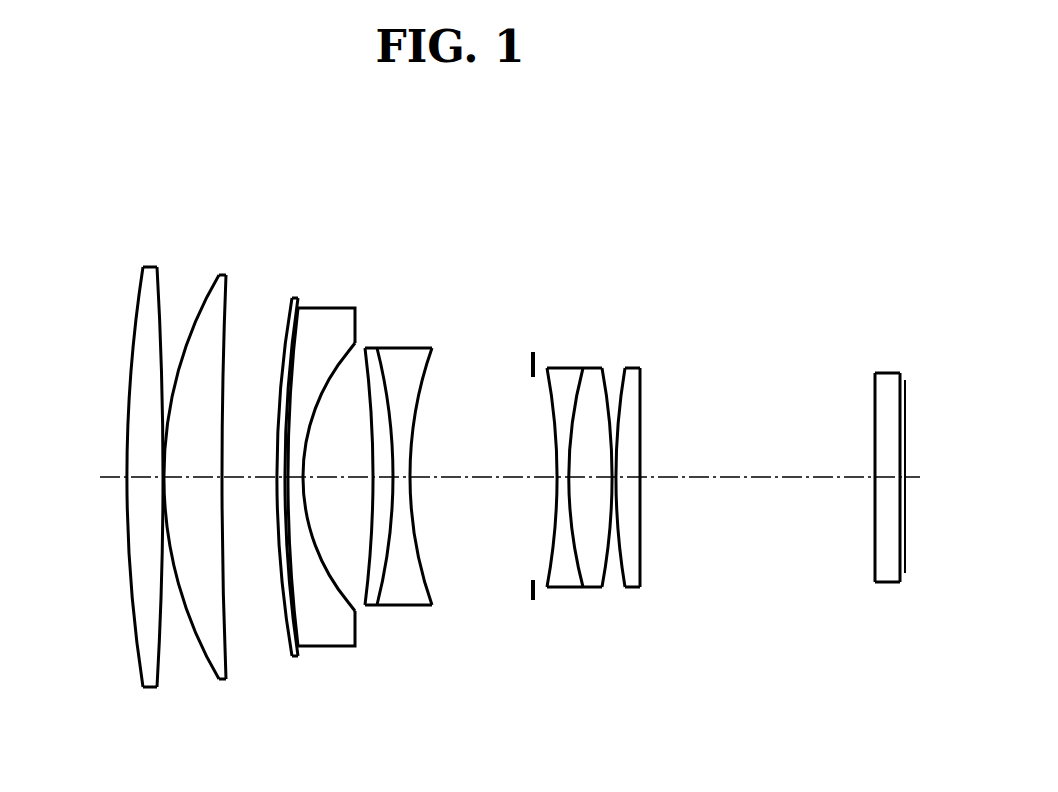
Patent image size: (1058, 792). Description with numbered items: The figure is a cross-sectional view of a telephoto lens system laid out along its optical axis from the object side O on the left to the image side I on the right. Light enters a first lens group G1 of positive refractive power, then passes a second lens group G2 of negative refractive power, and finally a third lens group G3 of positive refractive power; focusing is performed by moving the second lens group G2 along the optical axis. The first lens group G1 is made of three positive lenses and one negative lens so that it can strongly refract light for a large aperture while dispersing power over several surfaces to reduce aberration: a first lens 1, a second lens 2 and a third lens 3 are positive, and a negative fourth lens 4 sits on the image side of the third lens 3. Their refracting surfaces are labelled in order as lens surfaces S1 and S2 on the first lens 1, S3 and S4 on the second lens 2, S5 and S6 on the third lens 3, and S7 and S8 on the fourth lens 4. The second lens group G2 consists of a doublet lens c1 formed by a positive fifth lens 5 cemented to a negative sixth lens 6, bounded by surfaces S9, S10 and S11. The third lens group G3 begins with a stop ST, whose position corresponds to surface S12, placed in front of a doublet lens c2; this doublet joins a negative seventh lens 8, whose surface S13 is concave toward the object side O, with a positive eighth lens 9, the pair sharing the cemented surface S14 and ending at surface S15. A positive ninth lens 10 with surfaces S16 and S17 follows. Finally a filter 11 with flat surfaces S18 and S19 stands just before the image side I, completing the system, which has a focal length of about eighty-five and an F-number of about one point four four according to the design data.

The first lens 1 is at (150, 267).
The second lens 2 is at (222, 275).
The third lens 3 is at (292, 298).
The fourth lens 4 is at (345, 308).
The fifth lens 5 is at (375, 348).
The sixth lens 6 is at (414, 348).
The seventh lens 8 is at (559, 368).
The eighth lens 9 is at (591, 368).
The ninth lens 10 is at (636, 368).
The filter 11 is at (890, 373).
The first lens group G1 is at (358, 203).
The second lens group G2 is at (365, 203).
The third lens group G3 is at (640, 203).
The doublet lens c1 is at (423, 272).
The doublet lens c2 is at (553, 295).
The stop ST is at (532, 360).
The object side O is at (71, 477).
The image side I is at (932, 478).
The lens surface S1 is at (135, 645).
The lens surface S2 is at (163, 650).
The lens surface S3 is at (196, 648).
The lens surface S4 is at (226, 650).
The lens surface S5 is at (286, 645).
The lens surface S6 is at (292, 573).
The lens surface S7 is at (328, 595).
The lens surface S8 is at (345, 595).
The lens surface S9 is at (372, 542).
The lens surface S10 is at (388, 570).
The lens surface S11 is at (427, 553).
The lens surface S12 is at (555, 510).
The lens surface S13 is at (577, 547).
The lens surface S14 is at (582, 565).
The lens surface S15 is at (602, 565).
The lens surface S16 is at (628, 560).
The lens surface S17 is at (641, 530).
The lens surface S18 is at (875, 543).
The lens surface S19 is at (897, 557).